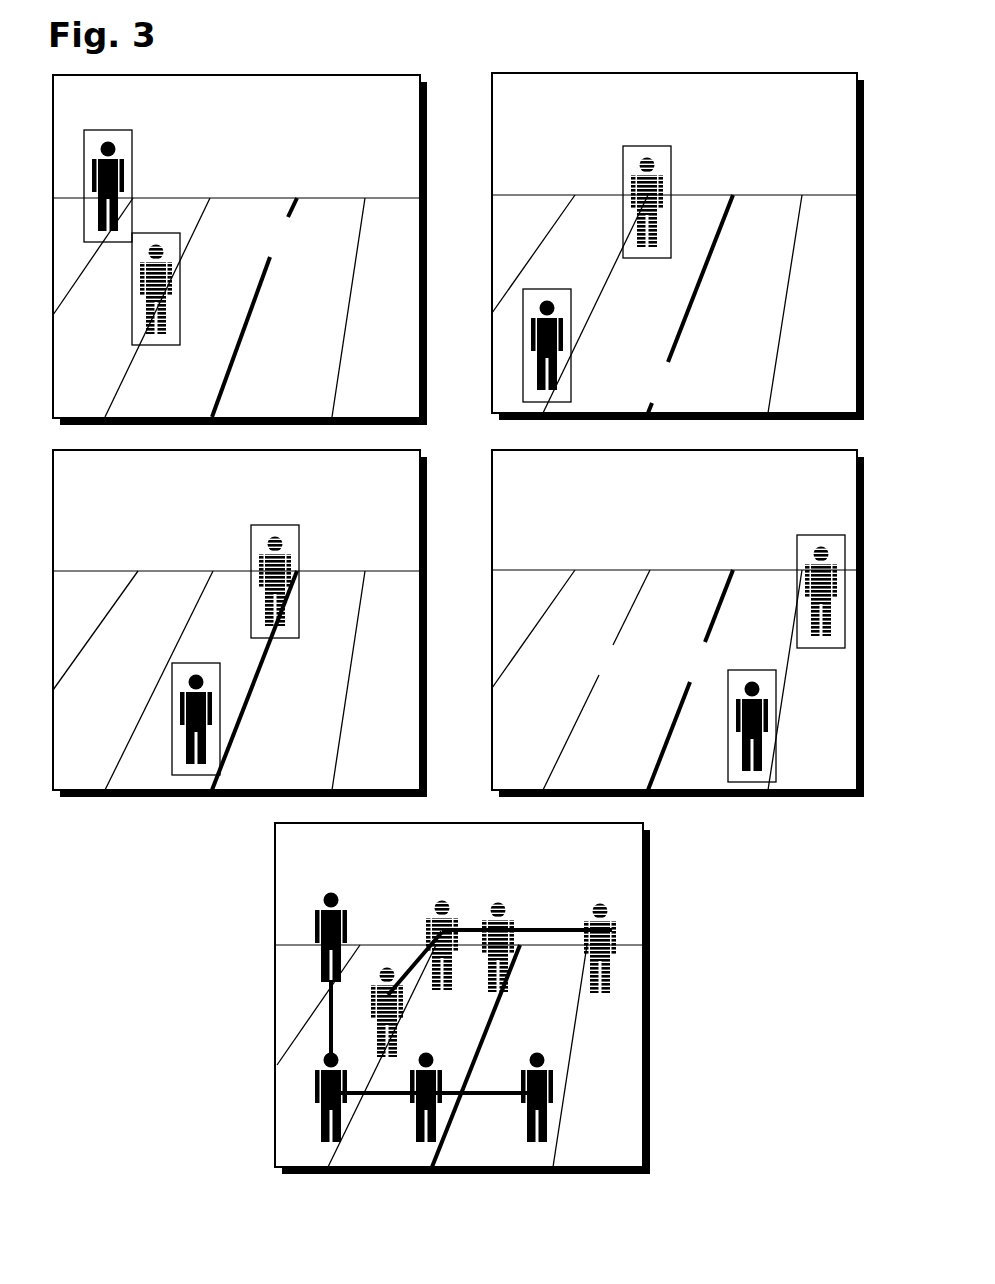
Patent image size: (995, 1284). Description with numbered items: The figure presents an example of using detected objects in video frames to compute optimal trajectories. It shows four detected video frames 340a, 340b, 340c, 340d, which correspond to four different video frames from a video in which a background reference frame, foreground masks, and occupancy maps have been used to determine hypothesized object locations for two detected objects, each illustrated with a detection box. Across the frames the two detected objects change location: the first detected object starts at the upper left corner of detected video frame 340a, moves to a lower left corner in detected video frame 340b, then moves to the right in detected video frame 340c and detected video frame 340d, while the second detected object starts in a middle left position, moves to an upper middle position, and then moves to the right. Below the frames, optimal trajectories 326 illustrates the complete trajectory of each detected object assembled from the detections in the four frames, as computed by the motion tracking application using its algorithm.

The detected video frame 340a is at (240, 250).
The detected video frame 340b is at (678, 246).
The detected video frame 340c is at (240, 623).
The detected video frame 340d is at (678, 623).
The optimal trajectories 326 is at (456, 998).